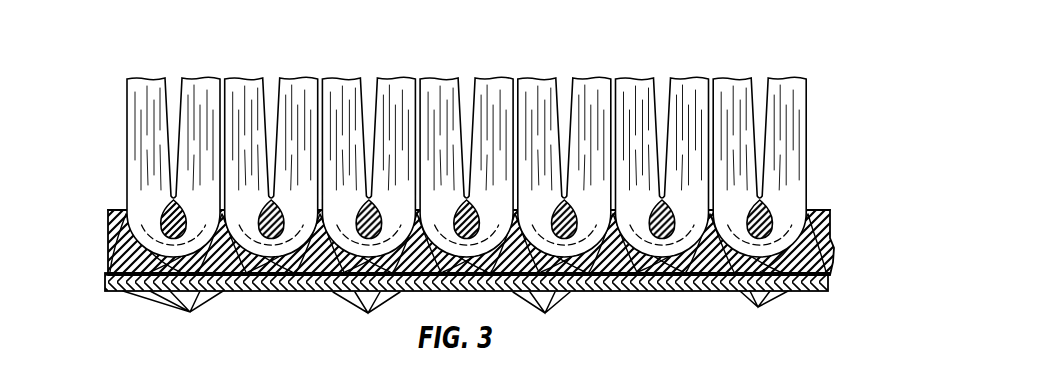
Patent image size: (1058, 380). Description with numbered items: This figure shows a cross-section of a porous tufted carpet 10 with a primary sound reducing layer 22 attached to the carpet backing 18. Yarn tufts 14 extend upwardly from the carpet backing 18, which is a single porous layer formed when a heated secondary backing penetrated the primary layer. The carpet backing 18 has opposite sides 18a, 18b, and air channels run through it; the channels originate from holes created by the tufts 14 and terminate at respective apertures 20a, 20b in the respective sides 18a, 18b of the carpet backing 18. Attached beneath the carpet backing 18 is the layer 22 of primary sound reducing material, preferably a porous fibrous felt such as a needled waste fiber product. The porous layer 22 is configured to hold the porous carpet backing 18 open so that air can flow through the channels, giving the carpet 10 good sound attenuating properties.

The tufted carpet 10 is at (92, 138).
The yarn tufts 14 is at (808, 100).
The carpet backing 18 is at (112, 238).
The first side of the carpet backing 18a is at (820, 212).
The second side of the carpet backing 18b is at (808, 272).
The apertures in first side of carpet backing 20a is at (218, 216).
The apertures in second side of carpet backing 20b is at (455, 318).
The primary sound reducing layer 22 is at (833, 287).